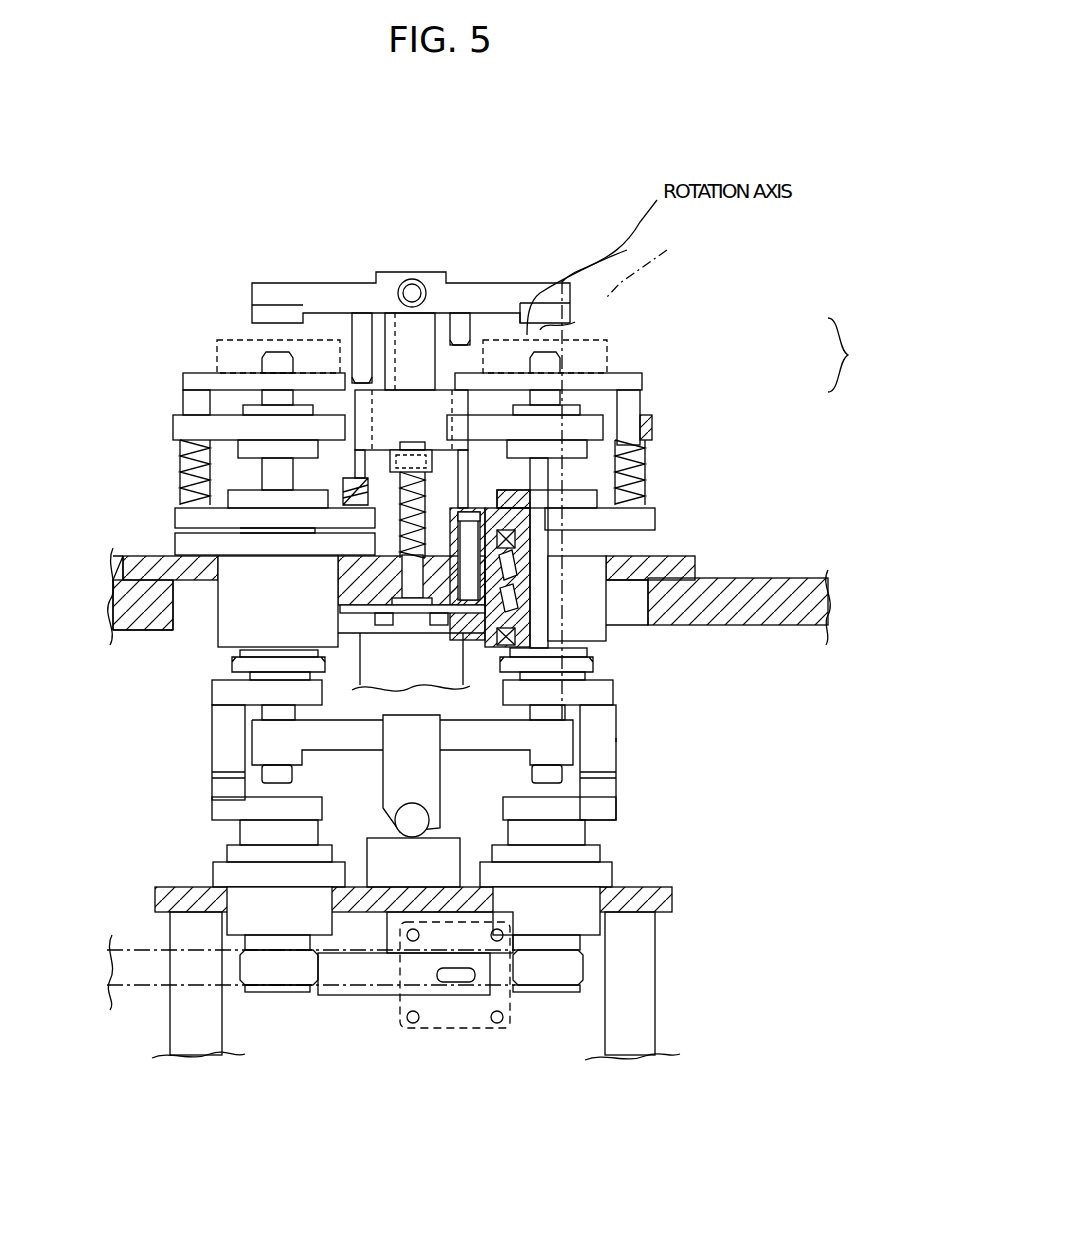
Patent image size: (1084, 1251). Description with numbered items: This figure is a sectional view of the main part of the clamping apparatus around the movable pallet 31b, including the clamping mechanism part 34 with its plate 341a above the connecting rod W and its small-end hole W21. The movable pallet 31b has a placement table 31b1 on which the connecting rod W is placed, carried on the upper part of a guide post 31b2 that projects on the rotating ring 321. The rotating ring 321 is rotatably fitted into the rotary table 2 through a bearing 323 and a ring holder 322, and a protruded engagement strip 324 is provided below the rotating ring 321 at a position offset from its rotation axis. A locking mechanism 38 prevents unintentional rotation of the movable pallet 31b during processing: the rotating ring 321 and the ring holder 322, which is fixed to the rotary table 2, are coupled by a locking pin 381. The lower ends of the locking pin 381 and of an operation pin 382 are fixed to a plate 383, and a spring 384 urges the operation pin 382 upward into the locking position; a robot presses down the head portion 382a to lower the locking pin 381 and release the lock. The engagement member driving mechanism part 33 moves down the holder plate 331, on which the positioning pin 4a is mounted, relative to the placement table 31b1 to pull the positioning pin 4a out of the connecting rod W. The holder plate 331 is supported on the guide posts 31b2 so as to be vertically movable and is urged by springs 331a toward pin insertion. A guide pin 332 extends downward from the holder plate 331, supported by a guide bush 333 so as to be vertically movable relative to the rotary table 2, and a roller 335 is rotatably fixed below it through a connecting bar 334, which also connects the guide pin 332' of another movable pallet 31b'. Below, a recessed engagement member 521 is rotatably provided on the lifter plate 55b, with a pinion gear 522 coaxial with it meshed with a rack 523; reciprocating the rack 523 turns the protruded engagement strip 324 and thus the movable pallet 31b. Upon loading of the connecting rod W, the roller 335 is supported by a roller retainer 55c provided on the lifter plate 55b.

The rotary table 2 is at (814, 624).
The positioning pin 4a is at (257, 370).
The movable pallet 31b is at (683, 489).
The movable pallet 31b' is at (239, 379).
The placement table 31b1 is at (607, 365).
The guide post 31b2 is at (640, 400).
The engagement member driving mechanism part 33 is at (512, 880).
The clamping mechanism part 34 is at (448, 422).
The locking mechanism 38 is at (448, 435).
The lifter plate 55b is at (672, 902).
The roller retainer 55c is at (283, 930).
The rotating ring 321 is at (671, 593).
The ring holder 322 is at (647, 545).
The bearing 323 is at (606, 660).
The protruded engagement strip 324 is at (638, 914).
The holder plate 331 is at (652, 432).
The spring 331a is at (647, 420).
The guide pin 332 is at (662, 468).
The guide pin 332' is at (207, 752).
The guide bush 333 is at (645, 492).
The connecting bar 334 is at (333, 740).
The roller 335 is at (422, 818).
The clamp plate 341a is at (305, 283).
The locking pin 381 is at (480, 602).
The operation pin 382 is at (357, 374).
The head portion 382a is at (418, 448).
The plate 383 is at (618, 713).
The spring 384 is at (392, 490).
The recessed engagement member 521 is at (613, 802).
The pinion gear 522 is at (565, 970).
The rack 523 is at (135, 983).
The connecting rod W is at (612, 318).
The small-end hole W21 is at (640, 267).